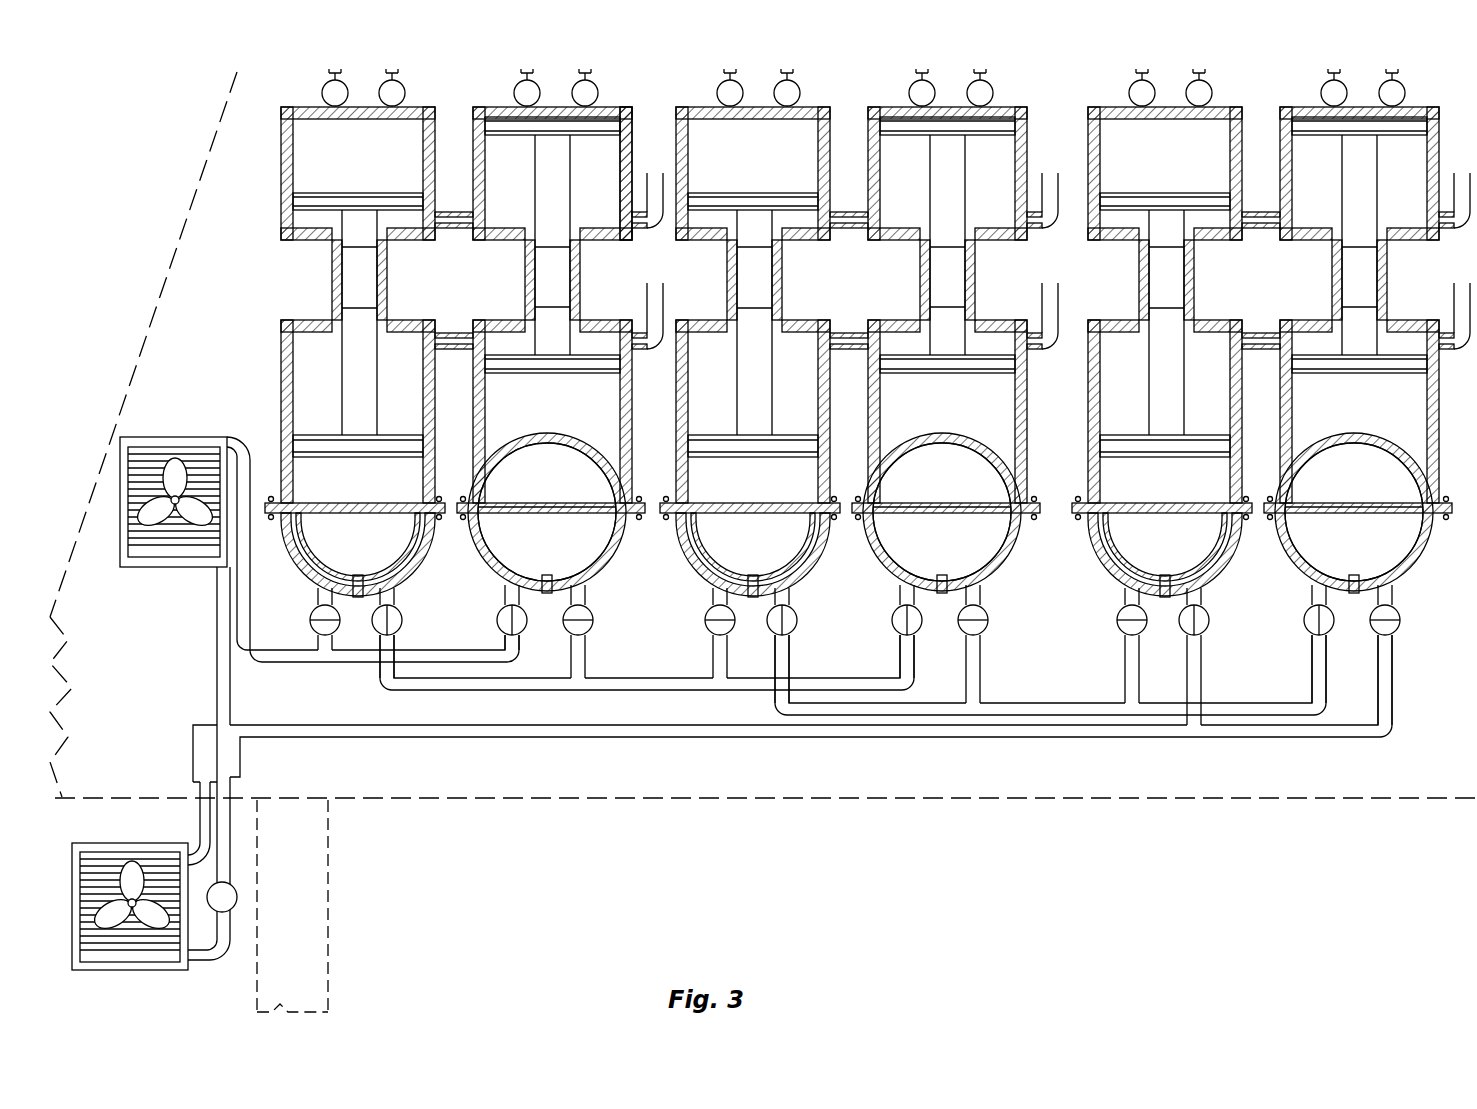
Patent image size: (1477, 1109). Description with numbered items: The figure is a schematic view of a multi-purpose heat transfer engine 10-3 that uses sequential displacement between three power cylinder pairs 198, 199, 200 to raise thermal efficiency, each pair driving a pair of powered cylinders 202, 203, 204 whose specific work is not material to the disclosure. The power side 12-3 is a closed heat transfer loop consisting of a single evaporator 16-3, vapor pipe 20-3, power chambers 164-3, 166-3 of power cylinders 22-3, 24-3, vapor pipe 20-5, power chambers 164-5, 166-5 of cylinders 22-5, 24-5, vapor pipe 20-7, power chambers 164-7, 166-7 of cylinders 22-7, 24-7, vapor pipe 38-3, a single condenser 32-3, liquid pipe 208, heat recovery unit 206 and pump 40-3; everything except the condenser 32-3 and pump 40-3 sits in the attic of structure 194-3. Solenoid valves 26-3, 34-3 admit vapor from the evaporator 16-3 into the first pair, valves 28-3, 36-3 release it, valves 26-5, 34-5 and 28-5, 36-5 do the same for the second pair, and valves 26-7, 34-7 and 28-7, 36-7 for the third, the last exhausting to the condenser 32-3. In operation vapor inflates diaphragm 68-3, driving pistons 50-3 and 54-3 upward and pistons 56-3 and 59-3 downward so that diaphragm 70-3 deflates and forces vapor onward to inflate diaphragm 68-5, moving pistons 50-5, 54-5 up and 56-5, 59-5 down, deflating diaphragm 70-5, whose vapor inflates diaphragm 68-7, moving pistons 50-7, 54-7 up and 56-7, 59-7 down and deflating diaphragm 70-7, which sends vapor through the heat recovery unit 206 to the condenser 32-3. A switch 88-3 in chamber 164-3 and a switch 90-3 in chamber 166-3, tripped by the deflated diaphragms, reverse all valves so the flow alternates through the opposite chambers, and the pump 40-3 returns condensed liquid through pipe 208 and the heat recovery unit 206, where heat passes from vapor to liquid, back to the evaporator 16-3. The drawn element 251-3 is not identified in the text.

The multi-purpose heat transfer engine 10-3 is at (128, 374).
The power side 12-3 is at (197, 681).
The evaporator 16-3 is at (163, 436).
The vapor pipe 20-3 is at (284, 664).
The vapor pipe 20-5 is at (488, 691).
The vapor pipe 20-7 is at (1022, 703).
The power cylinder 22-3 is at (310, 319).
The power cylinder 22-5 is at (683, 318).
The power cylinder 22-7 is at (1118, 318).
The power cylinder 24-3 is at (598, 318).
The power cylinder 24-5 is at (1028, 446).
The power cylinder 24-7 is at (1382, 450).
The solenoid valve 26-3 is at (312, 614).
The solenoid valve 26-5 is at (705, 611).
The solenoid valve 26-7 is at (1120, 613).
The solenoid valve 28-3 is at (401, 617).
The solenoid valve 28-5 is at (795, 618).
The solenoid valve 28-7 is at (1206, 626).
The condenser 32-3 is at (100, 842).
The solenoid valve 34-3 is at (503, 609).
The solenoid valve 34-5 is at (900, 609).
The solenoid valve 34-7 is at (1308, 611).
The solenoid valve 36-3 is at (597, 622).
The solenoid valve 36-5 is at (990, 630).
The solenoid valve 36-7 is at (1399, 626).
The vapor pipe 38-3 is at (444, 739).
The pump 40-3 is at (237, 897).
The piston 50-3 is at (325, 457).
The piston 50-5 is at (705, 436).
The piston 50-7 is at (1118, 436).
The piston 54-3 is at (357, 192).
The piston 54-5 is at (752, 192).
The piston 54-7 is at (1164, 192).
The piston 56-3 is at (500, 373).
The piston 56-5 is at (903, 373).
The piston 56-7 is at (1309, 373).
The piston 59-3 is at (514, 136).
The piston 59-5 is at (1023, 121).
The piston 59-7 is at (1321, 136).
The diaphragm 68-3 is at (338, 507).
The diaphragm 68-5 is at (710, 541).
The diaphragm 68-7 is at (1125, 541).
The diaphragm 70-3 is at (495, 449).
The diaphragm 70-5 is at (900, 443).
The diaphragm 70-7 is at (1308, 443).
The switch 88-3 is at (358, 575).
The switch 90-3 is at (548, 575).
The power chamber 164-3 is at (410, 565).
The power chamber 164-5 is at (676, 545).
The power chamber 164-7 is at (1087, 545).
The power chamber 166-3 is at (573, 486).
The power chamber 166-5 is at (968, 486).
The power chamber 166-7 is at (1354, 512).
The structure 194-3 is at (328, 888).
The power cylinder pair 198 is at (484, 318).
The power cylinder pair 199 is at (879, 318).
The power cylinder pair 200 is at (1289, 318).
The pair of powered cylinders 202 is at (417, 107).
The pair of powered cylinders 203 is at (812, 107).
The pair of powered cylinders 204 is at (1224, 107).
The heat recovery unit 206 is at (243, 766).
The liquid pipe 208 is at (216, 603).
The cylinder 251-3 is at (631, 142).